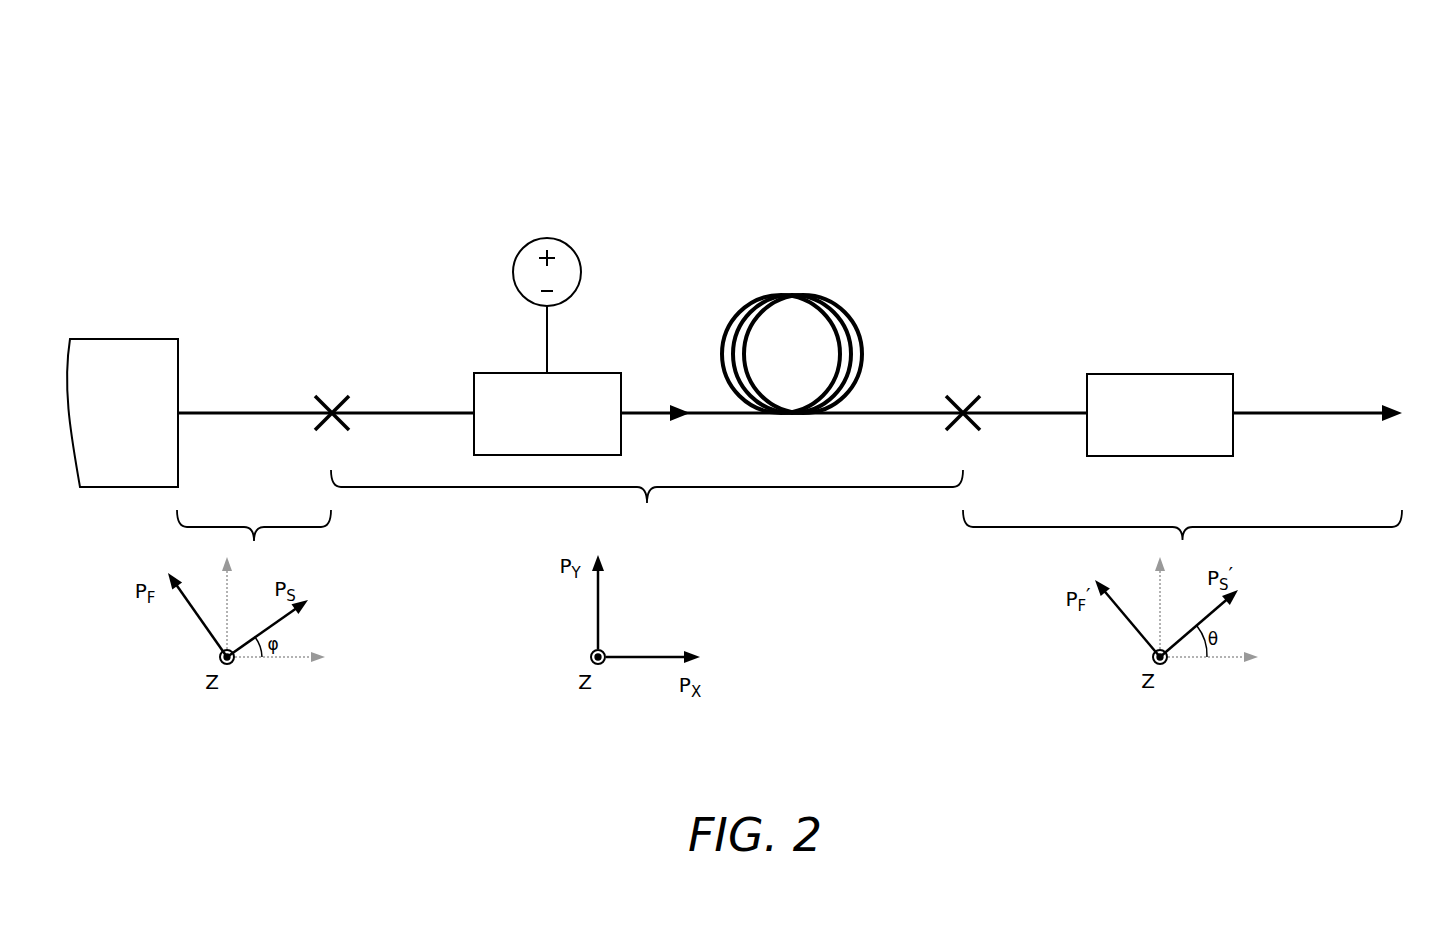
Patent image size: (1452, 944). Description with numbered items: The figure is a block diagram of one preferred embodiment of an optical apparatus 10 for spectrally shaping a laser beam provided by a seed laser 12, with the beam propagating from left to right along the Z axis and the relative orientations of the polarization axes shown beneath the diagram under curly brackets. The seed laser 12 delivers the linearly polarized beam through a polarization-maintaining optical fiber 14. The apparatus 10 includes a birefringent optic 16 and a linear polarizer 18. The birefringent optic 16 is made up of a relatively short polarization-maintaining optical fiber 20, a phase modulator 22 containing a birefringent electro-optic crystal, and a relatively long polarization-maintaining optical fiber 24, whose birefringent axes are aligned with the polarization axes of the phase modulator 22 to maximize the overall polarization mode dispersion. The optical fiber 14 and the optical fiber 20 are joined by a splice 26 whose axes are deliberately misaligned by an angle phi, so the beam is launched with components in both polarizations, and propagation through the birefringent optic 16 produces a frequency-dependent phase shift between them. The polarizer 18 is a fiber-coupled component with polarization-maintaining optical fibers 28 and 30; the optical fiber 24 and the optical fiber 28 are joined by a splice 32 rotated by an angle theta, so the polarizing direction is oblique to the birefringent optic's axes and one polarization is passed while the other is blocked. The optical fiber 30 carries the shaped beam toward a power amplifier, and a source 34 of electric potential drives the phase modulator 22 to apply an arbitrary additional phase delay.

The optical apparatus 10 is at (270, 140).
The seed laser 12 is at (127, 348).
The polarization-maintaining optical fiber 14 is at (203, 408).
The birefringent optic 16 is at (647, 457).
The linear polarizer 18 is at (1175, 380).
The polarization-maintaining optical fiber 20 is at (438, 408).
The phase modulator 22 is at (592, 380).
The polarization-maintaining optical fiber 24 is at (833, 302).
The splice 26 is at (332, 397).
The polarization-maintaining optical fiber 28 is at (1028, 408).
The polarization-maintaining optical fiber 30 is at (1300, 408).
The splice 32 is at (965, 398).
The source 34 is at (533, 248).